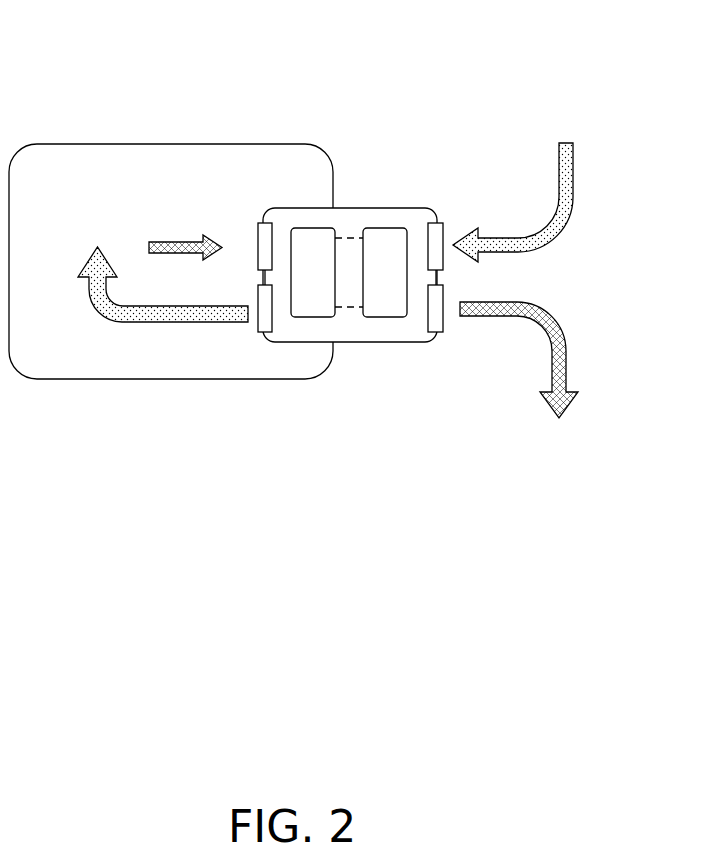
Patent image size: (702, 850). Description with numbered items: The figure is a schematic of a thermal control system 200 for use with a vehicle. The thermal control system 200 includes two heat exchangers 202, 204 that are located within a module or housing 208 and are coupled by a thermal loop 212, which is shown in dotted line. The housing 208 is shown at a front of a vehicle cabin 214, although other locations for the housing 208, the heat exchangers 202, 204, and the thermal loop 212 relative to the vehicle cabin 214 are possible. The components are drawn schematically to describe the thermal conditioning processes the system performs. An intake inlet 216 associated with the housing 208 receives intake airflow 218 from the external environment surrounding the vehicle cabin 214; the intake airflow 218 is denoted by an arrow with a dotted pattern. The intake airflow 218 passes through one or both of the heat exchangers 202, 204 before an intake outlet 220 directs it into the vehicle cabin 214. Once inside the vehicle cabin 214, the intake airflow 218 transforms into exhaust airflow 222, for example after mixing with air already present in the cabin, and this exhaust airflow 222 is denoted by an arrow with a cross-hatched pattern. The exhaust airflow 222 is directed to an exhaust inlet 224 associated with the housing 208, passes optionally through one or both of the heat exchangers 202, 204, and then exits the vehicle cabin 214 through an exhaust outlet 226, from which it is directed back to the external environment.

The thermal control system 200 is at (359, 61).
The heat exchanger 202 is at (368, 318).
The heat exchanger 204 is at (300, 318).
The housing 208 is at (405, 209).
The thermal loop 212 is at (349, 238).
The vehicle cabin 214 is at (50, 143).
The intake inlet 216 is at (445, 225).
The intake airflow 218 is at (567, 224).
The intake outlet 220 is at (254, 331).
The exhaust airflow 222 is at (549, 312).
The exhaust inlet 224 is at (258, 226).
The exhaust outlet 226 is at (445, 332).